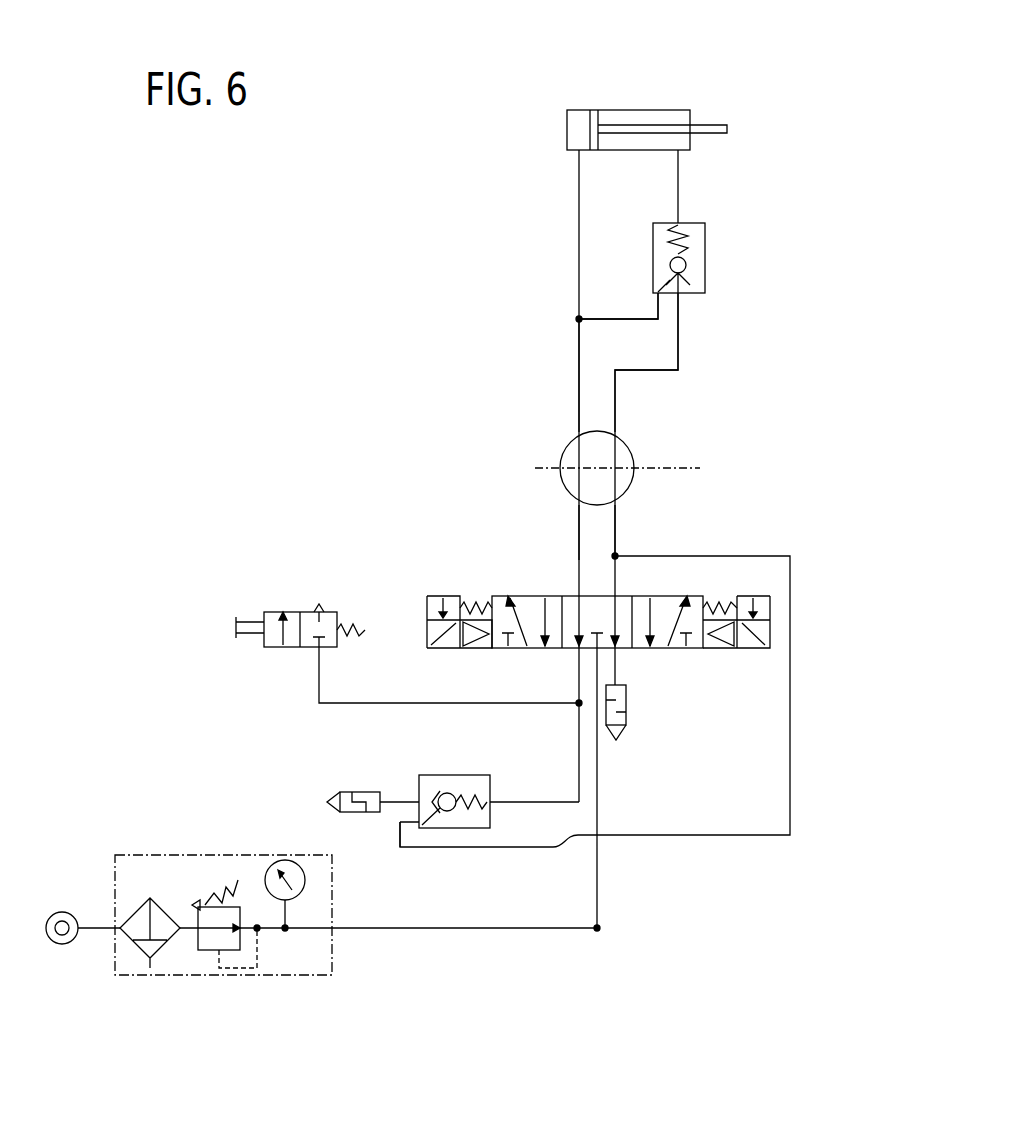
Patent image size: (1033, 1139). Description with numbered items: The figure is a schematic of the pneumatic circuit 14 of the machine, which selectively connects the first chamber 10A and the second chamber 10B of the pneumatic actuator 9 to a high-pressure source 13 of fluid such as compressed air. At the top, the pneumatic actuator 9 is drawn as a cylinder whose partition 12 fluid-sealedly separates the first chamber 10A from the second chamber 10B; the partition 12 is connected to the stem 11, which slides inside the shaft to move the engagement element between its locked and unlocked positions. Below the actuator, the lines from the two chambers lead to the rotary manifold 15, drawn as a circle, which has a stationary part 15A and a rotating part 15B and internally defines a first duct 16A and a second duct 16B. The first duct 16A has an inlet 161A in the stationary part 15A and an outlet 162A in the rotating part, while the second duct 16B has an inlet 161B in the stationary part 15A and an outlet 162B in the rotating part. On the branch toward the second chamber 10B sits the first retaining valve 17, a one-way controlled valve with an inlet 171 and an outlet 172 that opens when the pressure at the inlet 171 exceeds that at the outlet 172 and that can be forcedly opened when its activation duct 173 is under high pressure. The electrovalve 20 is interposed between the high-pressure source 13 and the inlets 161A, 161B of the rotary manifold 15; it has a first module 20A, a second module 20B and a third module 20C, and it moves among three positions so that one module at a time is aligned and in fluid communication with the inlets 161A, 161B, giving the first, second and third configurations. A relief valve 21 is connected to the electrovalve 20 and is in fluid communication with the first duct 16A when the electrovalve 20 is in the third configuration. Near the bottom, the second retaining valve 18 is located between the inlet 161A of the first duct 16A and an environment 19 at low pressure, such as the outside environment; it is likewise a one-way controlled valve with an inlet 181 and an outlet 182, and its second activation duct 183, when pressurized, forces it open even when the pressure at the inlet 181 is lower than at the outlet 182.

The pneumatic actuator 9 is at (630, 100).
The first chamber 10A is at (578, 128).
The second chamber 10B is at (672, 118).
The stem 11 is at (712, 127).
The partition 12 is at (594, 110).
The high-pressure source 13 is at (222, 985).
The pneumatic circuit 14 is at (356, 433).
The rotary manifold 15 is at (572, 452).
The stationary part 15A is at (592, 482).
The rotating part 15B is at (623, 452).
The first duct 16A is at (560, 453).
The second duct 16B is at (635, 468).
The first retaining valve 17 is at (729, 239).
The second retaining valve 18 is at (393, 884).
The environment at low pressure 19 is at (627, 730).
The electrovalve 20 is at (546, 628).
The first module 20A is at (680, 648).
The second module 20B is at (523, 596).
The third module 20C is at (675, 599).
The relief valve 21 is at (285, 650).
The inlet of the first duct 161A is at (579, 505).
The inlet of the second duct 161B is at (615, 505).
The outlet of the first duct 162A is at (579, 432).
The outlet of the second duct 162B is at (615, 432).
The inlet of the first retaining valve 171 is at (678, 293).
The outlet of the first retaining valve 172 is at (678, 223).
The activation duct 173 is at (658, 293).
The inlet of the second retaining valve 181 is at (408, 800).
The outlet of the second retaining valve 182 is at (490, 802).
The second activation duct 183 is at (416, 824).